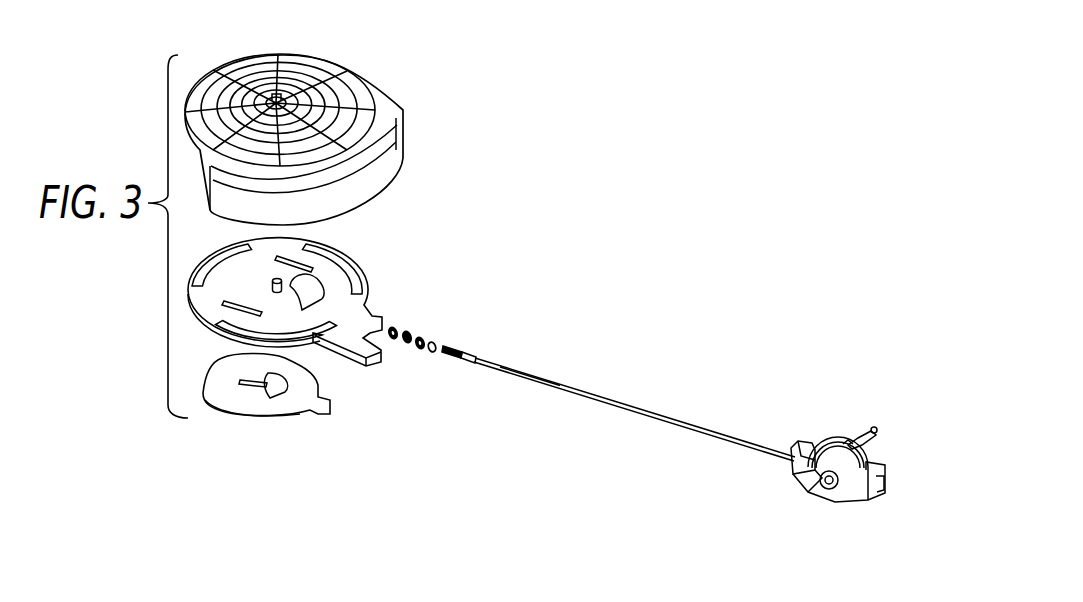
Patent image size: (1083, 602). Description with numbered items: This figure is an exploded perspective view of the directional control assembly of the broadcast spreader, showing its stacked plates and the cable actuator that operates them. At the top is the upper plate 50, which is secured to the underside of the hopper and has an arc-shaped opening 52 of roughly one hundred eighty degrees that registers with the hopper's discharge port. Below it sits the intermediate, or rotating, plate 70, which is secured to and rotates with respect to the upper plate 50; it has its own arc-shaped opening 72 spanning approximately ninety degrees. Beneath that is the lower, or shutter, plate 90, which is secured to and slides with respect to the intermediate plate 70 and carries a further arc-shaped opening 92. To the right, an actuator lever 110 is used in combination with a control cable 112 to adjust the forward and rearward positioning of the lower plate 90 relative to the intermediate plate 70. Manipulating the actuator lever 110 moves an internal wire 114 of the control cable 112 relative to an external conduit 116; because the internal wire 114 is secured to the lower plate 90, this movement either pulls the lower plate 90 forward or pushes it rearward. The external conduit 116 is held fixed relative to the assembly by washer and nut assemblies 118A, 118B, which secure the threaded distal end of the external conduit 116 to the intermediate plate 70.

The upper plate 50 is at (401, 110).
The arc-shaped opening 52 is at (308, 98).
The intermediate plate 70 is at (368, 270).
The arc-shaped opening 72 is at (320, 281).
The lower plate 90 is at (297, 415).
The arc-shaped opening 92 is at (262, 402).
The actuator lever 110 is at (838, 438).
The control cable 112 is at (738, 448).
The internal wire 114 is at (443, 349).
The external conduit 116 is at (542, 387).
The washer and nut assembly 118A is at (412, 353).
The washer and nut assembly 118B is at (413, 334).